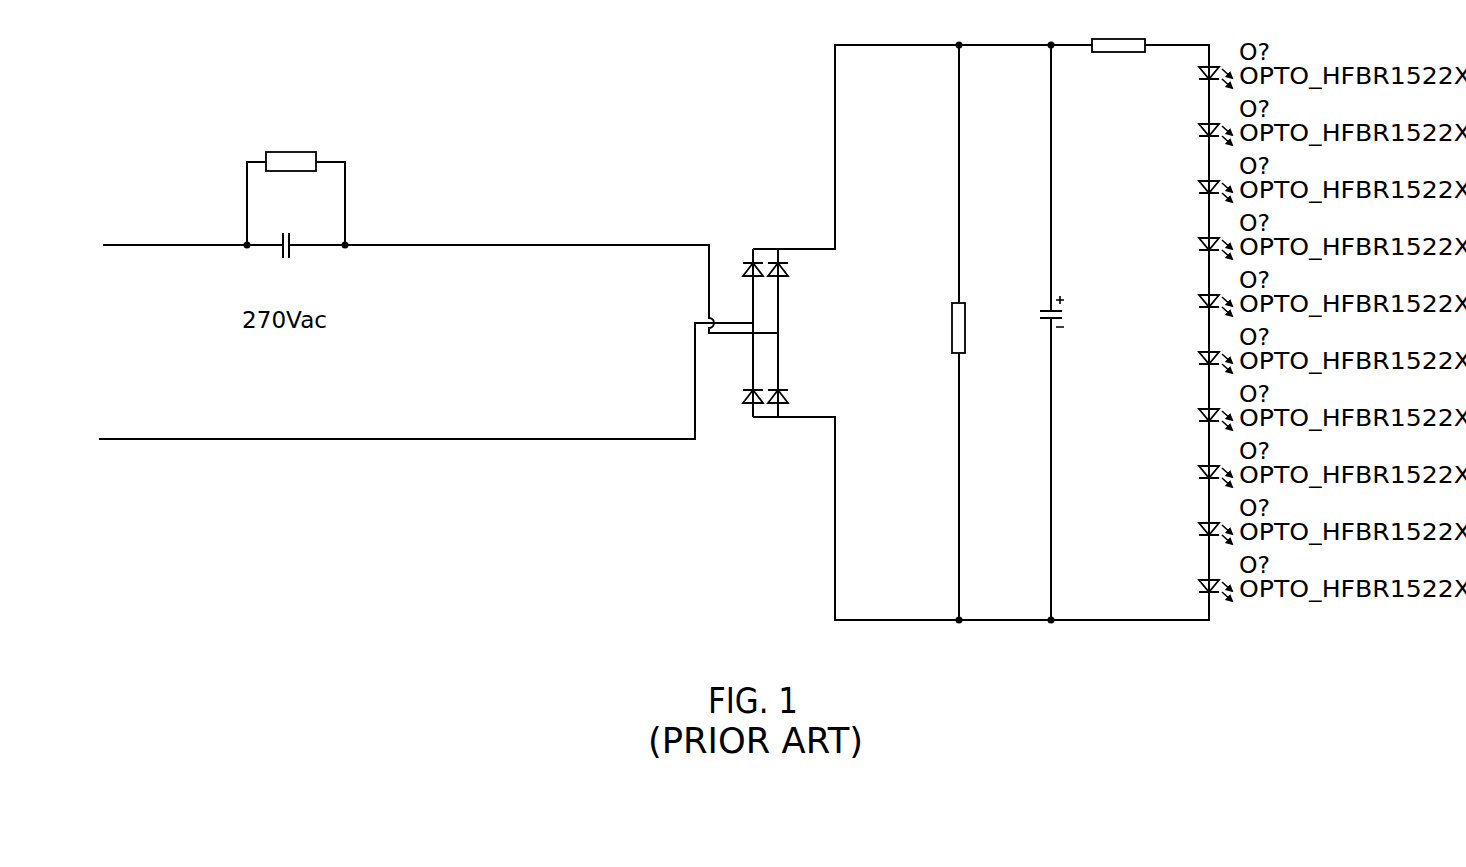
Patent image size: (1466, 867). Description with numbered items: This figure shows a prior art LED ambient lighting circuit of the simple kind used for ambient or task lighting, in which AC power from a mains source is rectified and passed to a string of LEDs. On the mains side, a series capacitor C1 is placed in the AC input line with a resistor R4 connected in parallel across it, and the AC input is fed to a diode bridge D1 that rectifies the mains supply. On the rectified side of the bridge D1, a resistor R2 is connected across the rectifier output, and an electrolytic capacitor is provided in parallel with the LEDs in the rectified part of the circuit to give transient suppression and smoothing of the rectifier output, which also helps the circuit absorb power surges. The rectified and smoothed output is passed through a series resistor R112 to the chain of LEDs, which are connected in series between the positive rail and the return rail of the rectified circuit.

The resistor R4 (330k) R4 is at (296, 185).
The capacitor C1 (440n) C1 is at (289, 249).
The diode bridge D_BRIDGE D1 is at (836, 333).
The resistor R2 (330k) R2 is at (987, 332).
The resistor R112 (50) R112 is at (1121, 48).